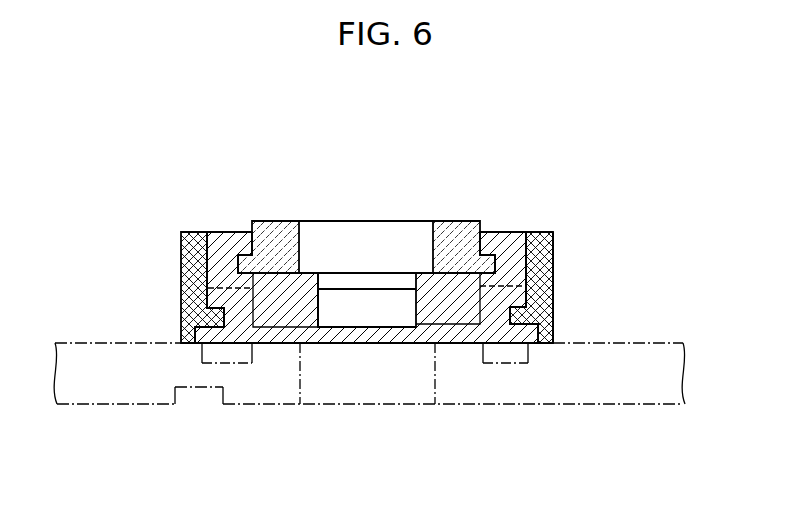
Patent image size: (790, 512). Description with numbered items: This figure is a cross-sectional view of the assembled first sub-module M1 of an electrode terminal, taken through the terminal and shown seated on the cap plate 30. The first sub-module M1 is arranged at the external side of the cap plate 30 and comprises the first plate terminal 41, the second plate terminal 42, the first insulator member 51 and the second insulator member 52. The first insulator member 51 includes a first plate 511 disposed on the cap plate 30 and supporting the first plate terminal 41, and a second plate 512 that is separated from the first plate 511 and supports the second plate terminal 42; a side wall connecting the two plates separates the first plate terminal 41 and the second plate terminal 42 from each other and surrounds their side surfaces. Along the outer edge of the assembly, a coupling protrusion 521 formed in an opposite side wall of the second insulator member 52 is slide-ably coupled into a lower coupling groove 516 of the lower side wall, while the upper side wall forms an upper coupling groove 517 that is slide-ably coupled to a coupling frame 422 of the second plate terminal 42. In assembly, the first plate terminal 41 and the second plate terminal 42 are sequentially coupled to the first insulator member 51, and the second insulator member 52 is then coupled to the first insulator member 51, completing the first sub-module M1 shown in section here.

The first sub-module M1 is at (571, 196).
The cap plate 30 is at (579, 392).
The first plate terminal 41 is at (272, 305).
The second plate terminal 42 is at (289, 224).
The coupling frame 422 is at (490, 262).
The first insulator member 51 is at (213, 232).
The first plate 511 is at (270, 337).
The second plate 512 is at (297, 277).
The second insulator member 52 is at (555, 243).
The lower coupling groove 516 is at (528, 313).
The upper coupling groove 517 is at (497, 252).
The coupling protrusion 521 is at (541, 291).